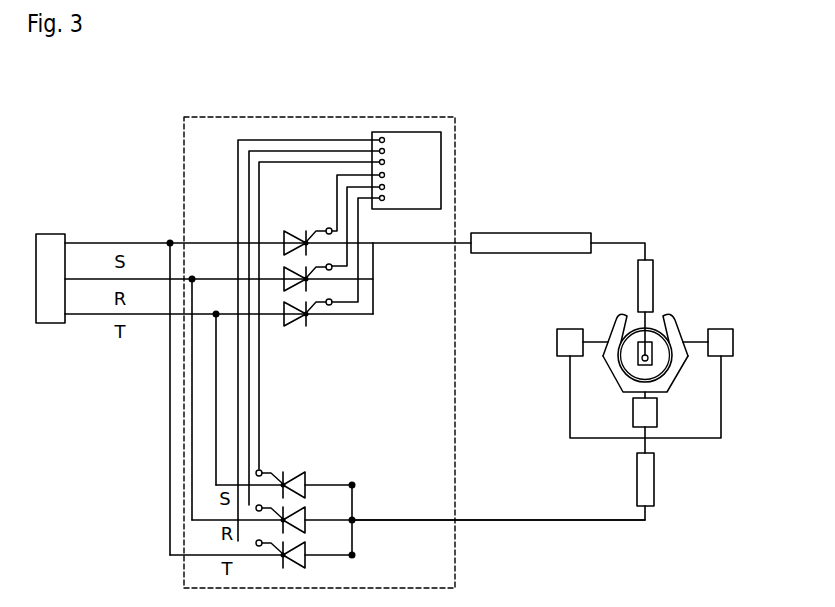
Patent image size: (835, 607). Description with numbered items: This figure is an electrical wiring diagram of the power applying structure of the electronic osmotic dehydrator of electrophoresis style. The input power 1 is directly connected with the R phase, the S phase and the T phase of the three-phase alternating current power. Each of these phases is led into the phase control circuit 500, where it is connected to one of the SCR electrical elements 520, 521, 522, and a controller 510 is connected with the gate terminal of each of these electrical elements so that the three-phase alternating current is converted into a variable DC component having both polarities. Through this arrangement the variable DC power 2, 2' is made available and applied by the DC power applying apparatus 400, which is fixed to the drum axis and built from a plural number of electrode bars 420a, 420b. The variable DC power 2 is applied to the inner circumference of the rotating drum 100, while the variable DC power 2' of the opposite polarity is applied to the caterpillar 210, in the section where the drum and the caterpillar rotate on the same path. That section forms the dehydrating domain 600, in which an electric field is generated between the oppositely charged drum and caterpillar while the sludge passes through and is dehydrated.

The input power 1 is at (52, 236).
The variable DC power 2 is at (558, 232).
The variable DC power 2' is at (498, 498).
The rotating drum 100 is at (614, 337).
The caterpillar 210 is at (641, 391).
The DC power applying apparatus 400 is at (653, 268).
The electrode bar 420a is at (651, 335).
The electrode bar 420b is at (557, 343).
The phase control circuit 500 is at (265, 116).
The controller 510 is at (431, 142).
The SCR electrical element 520 is at (306, 247).
The SCR electrical element 521 is at (306, 283).
The SCR electrical element 522 is at (295, 322).
The dehydrating domain 600 is at (612, 372).